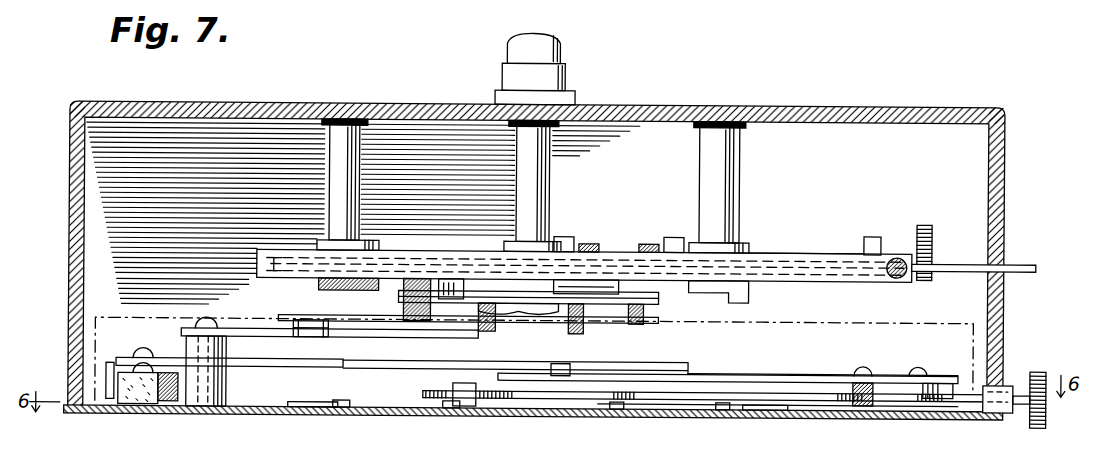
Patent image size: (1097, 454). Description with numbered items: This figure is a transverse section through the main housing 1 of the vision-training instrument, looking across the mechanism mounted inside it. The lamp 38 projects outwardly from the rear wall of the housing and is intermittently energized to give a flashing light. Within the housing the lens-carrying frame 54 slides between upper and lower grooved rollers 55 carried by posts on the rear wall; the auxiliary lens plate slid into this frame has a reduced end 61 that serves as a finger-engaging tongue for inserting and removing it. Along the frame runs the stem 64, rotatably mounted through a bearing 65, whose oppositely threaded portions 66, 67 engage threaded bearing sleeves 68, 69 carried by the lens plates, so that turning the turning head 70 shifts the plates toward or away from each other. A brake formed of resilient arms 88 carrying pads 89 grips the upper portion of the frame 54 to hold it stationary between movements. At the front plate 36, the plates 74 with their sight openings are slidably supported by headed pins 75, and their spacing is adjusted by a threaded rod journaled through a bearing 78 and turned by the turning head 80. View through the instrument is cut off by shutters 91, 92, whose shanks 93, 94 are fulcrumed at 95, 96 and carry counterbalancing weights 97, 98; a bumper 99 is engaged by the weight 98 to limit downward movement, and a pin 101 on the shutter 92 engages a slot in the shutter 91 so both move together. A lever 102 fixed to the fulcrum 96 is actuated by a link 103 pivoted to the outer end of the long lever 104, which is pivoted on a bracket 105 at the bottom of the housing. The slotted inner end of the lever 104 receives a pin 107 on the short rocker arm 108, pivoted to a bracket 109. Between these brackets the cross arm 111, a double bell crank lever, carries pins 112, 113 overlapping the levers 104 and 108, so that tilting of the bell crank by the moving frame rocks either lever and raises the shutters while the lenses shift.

The housing 1 is at (812, 101).
The front plate 36 is at (105, 413).
The lamp 38 is at (576, 86).
The frame 54 is at (808, 276).
The grooved rollers 55 is at (500, 238).
The reduced end 61 is at (1020, 258).
The stem 64 is at (806, 245).
The bearing 65 is at (874, 231).
The threaded portion 66 is at (648, 240).
The threaded portion 67 is at (592, 240).
The threaded bearing sleeve 68 is at (675, 233).
The threaded bearing sleeve 69 is at (570, 233).
The turning head 70 is at (928, 219).
The plates 74 is at (295, 407).
The headed pins 75 is at (452, 408).
The bearing 78 is at (1005, 380).
The turning head 80 is at (1043, 367).
The resilient arms 88 is at (462, 300).
The pads 89 is at (452, 276).
The shutter 91 is at (688, 369).
The shutter 92 is at (478, 370).
The shank 93 is at (793, 386).
The shank 94 is at (383, 367).
The fulcrum 95 is at (866, 362).
The fulcrum 96 is at (228, 358).
The weight 97 is at (957, 372).
The weight 98 is at (112, 362).
The bumper 99 is at (143, 404).
The pin 101 is at (565, 362).
The lever 102 is at (240, 327).
The link 103 is at (310, 318).
The lever 104 is at (385, 319).
The bracket 105 is at (395, 288).
The pin 107 is at (535, 312).
The rocker arm 108 is at (612, 322).
The bracket 109 is at (680, 288).
The cross arm 111 is at (578, 318).
The pin 112 is at (485, 320).
The pin 113 is at (585, 300).